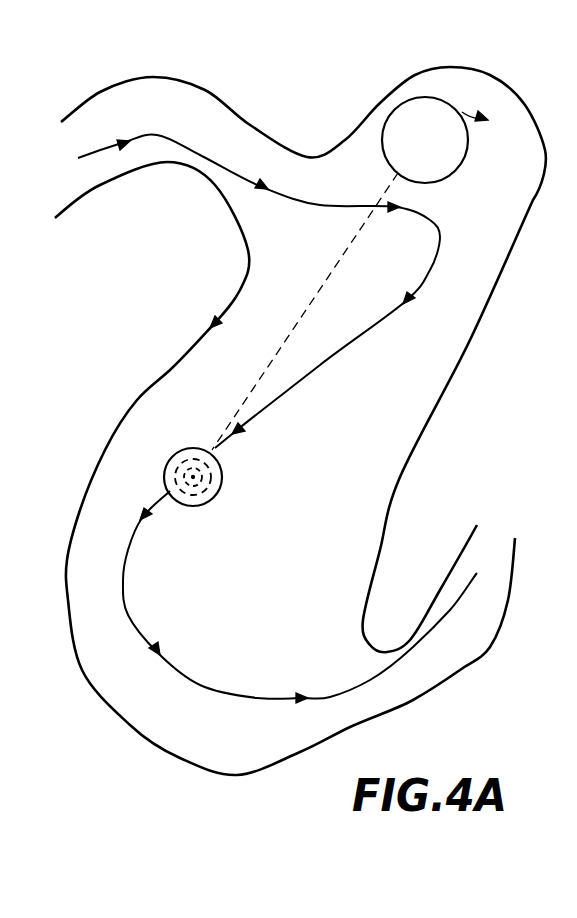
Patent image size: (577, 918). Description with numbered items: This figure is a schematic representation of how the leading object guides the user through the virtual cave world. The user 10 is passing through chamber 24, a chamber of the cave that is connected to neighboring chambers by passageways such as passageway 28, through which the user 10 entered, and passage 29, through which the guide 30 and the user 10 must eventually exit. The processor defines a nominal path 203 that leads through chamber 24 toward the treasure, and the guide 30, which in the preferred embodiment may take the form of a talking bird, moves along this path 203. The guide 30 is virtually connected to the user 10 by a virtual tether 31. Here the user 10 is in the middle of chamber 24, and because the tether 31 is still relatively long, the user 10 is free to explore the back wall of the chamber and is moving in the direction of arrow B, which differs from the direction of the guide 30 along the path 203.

The user 10 is at (382, 147).
The chamber 24 is at (503, 240).
The passageway 28 is at (225, 122).
The passage 29 is at (495, 597).
The guide 30 is at (223, 467).
The virtual tether 31 is at (307, 298).
The nominal path 203 is at (178, 138).
The arrow B is at (484, 125).